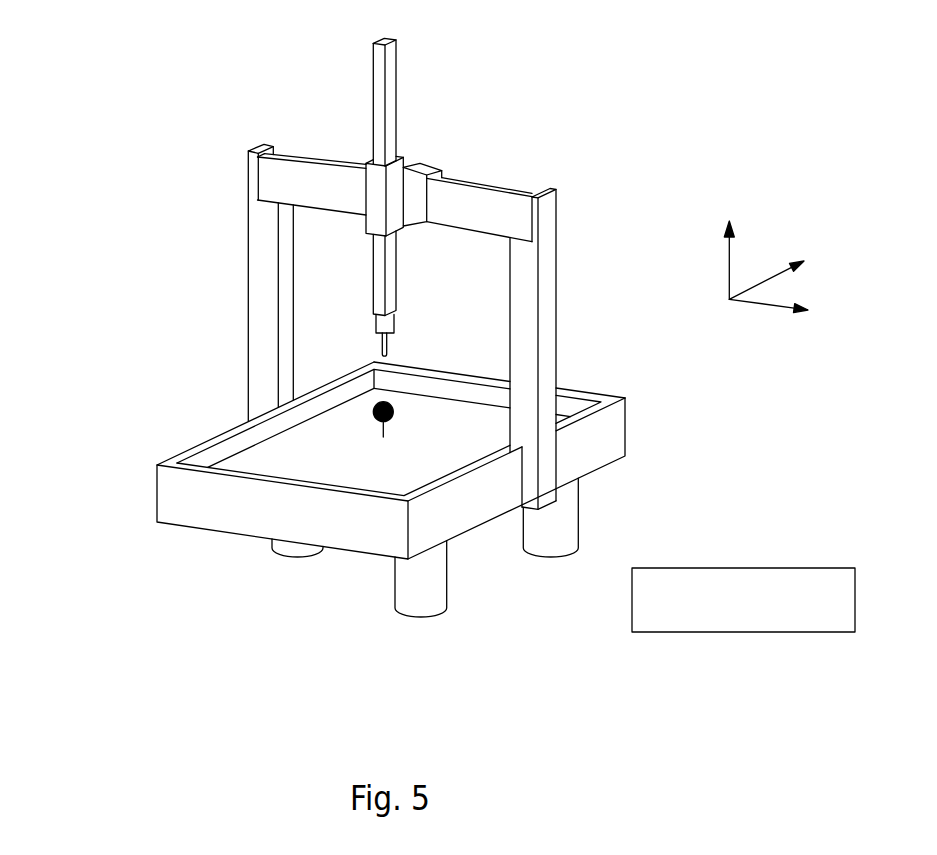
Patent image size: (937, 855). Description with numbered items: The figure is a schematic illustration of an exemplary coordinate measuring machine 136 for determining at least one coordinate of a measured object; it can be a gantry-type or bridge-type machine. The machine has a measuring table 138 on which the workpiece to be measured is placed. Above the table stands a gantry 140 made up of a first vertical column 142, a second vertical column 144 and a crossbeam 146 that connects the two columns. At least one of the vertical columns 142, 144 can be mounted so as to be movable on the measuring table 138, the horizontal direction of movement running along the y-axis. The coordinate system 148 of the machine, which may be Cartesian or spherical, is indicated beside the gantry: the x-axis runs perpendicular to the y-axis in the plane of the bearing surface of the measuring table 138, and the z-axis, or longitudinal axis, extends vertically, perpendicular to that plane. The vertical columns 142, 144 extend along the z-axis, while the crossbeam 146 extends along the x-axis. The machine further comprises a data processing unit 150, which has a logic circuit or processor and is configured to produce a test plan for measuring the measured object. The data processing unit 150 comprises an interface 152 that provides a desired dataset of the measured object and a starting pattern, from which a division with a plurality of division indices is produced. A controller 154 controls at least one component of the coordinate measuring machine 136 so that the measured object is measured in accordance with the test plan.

The coordinate measuring machine 136 is at (194, 122).
The measuring table 138 is at (143, 494).
The gantry 140 is at (572, 292).
The first vertical column 142 is at (544, 358).
The second vertical column 144 is at (258, 290).
The crossbeam 146 is at (497, 184).
The coordinate system 148 is at (827, 217).
The data processing unit 150 is at (743, 600).
The interface 152 is at (743, 600).
The controller 154 is at (820, 611).